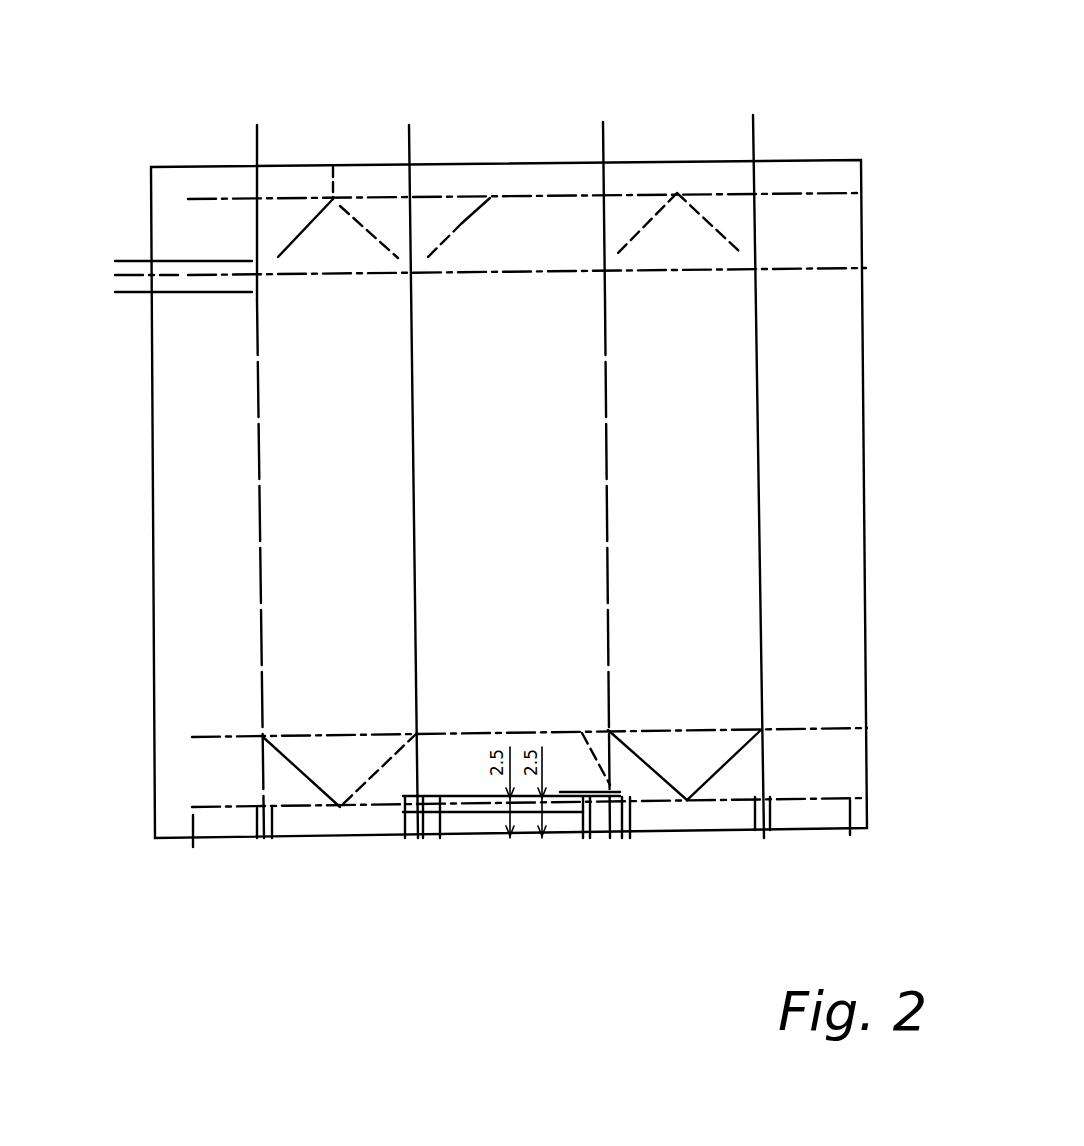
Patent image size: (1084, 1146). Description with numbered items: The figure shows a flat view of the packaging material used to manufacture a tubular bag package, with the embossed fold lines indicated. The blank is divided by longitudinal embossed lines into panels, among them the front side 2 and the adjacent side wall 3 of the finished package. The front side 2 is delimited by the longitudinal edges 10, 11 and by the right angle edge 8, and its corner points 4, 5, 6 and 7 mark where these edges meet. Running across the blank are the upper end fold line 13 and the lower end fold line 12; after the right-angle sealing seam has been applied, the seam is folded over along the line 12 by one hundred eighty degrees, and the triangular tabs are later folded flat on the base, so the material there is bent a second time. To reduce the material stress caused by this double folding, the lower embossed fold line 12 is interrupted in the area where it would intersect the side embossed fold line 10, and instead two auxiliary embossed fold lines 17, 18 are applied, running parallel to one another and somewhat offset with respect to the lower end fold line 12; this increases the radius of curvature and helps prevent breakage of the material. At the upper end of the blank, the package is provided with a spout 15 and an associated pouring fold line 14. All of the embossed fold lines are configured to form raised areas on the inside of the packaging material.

The front side 2 is at (523, 634).
The side wall 3 is at (350, 642).
The corner point 4 is at (413, 740).
The corner point 5 is at (610, 727).
The corner point 6 is at (410, 267).
The corner point 7 is at (608, 267).
The right angle edge 8 is at (610, 785).
The longitudinal edge 10 is at (415, 513).
The longitudinal edge 11 is at (610, 667).
The lower end fold line 12 is at (542, 807).
The upper end fold line 13 is at (803, 193).
The pouring fold line 14 is at (462, 223).
The spout 15 is at (365, 223).
The auxiliary embossed fold line 17 is at (422, 808).
The auxiliary embossed fold line 18 is at (430, 797).